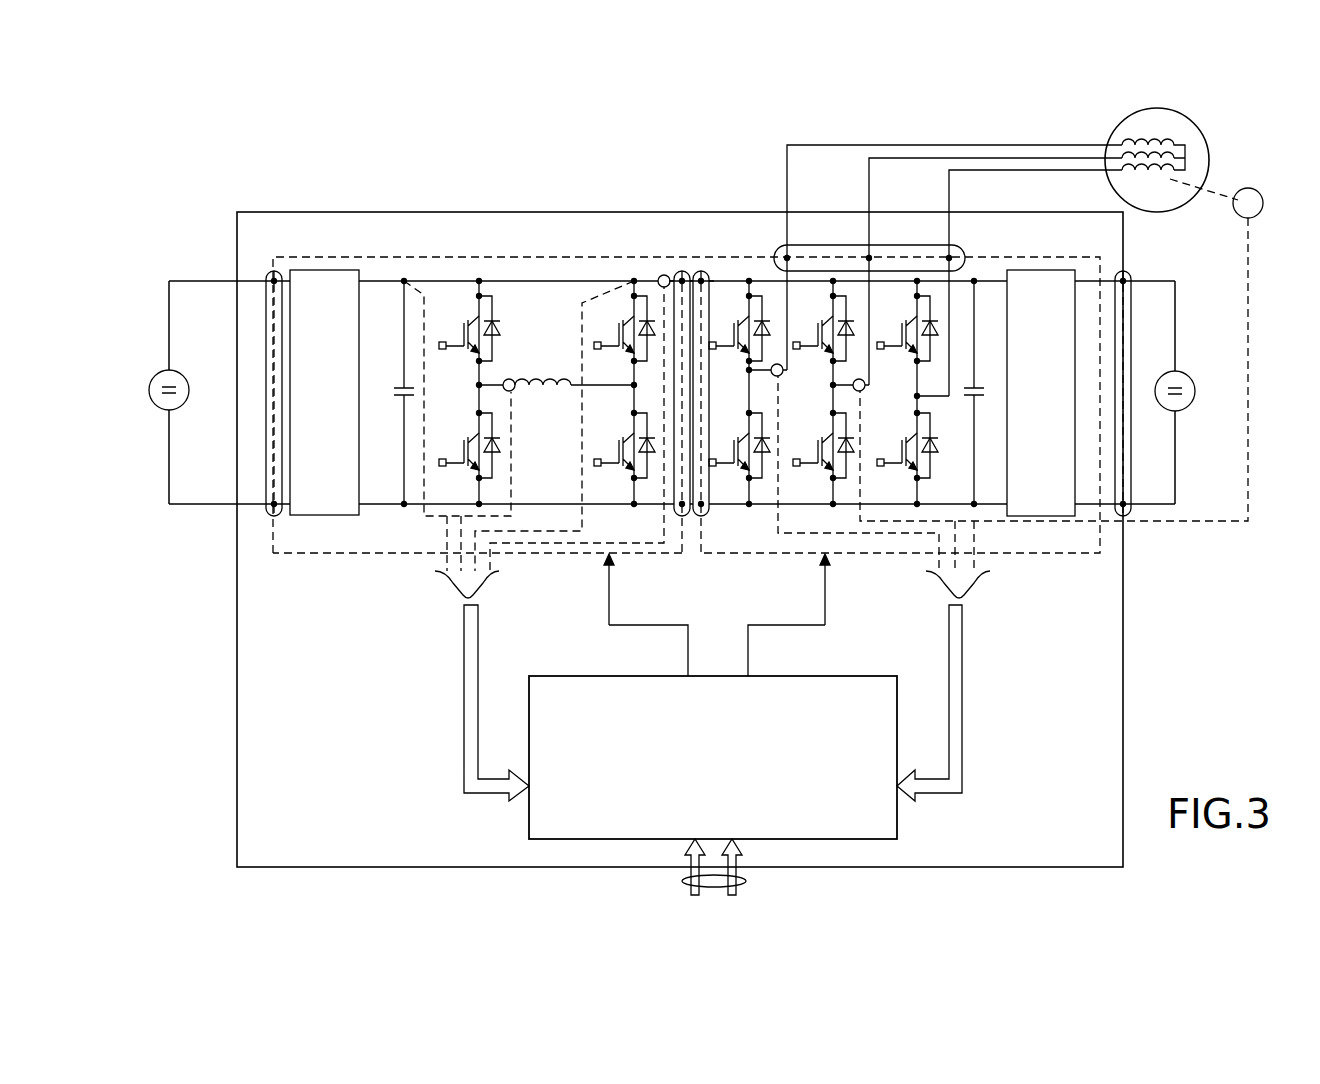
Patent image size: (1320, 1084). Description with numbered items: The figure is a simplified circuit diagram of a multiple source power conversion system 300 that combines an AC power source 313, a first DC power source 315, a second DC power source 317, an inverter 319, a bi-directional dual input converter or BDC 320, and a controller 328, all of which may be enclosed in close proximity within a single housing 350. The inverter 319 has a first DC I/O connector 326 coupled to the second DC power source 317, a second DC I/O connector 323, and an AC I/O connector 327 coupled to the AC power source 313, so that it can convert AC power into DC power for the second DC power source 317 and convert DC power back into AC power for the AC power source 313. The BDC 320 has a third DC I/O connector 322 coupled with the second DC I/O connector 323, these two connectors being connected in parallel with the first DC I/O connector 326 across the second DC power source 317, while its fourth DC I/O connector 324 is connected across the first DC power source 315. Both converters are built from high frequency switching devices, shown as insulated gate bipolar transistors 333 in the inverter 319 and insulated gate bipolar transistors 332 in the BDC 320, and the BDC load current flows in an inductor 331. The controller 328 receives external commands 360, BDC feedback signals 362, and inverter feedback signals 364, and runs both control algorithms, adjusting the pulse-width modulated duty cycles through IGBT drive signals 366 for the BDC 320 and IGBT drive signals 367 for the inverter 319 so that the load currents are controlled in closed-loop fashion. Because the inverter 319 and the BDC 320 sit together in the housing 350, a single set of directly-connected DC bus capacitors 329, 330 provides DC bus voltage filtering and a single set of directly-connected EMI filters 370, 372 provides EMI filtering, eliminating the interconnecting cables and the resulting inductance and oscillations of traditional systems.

The multiple source power conversion system 300 is at (302, 192).
The AC power source 313 is at (1210, 152).
The first DC power source 315 is at (178, 407).
The second DC power source 317 is at (1190, 408).
The inverter 319 is at (771, 255).
The BDC 320 is at (645, 382).
The third DC I/O connector 322 is at (678, 268).
The second DC I/O connector 323 is at (699, 268).
The fourth DC I/O connector 324 is at (272, 268).
The first DC I/O connector 326 is at (1130, 272).
The AC I/O connector 327 is at (919, 270).
The controller 328 is at (866, 837).
The DC bus capacitor 329 is at (393, 394).
The DC bus capacitor 330 is at (963, 395).
The inductor 331 is at (565, 370).
The insulated gate bipolar transistor 332 is at (450, 344).
The insulated gate bipolar transistor 333 is at (724, 345).
The housing 350 is at (435, 208).
The external commands 360 is at (680, 878).
The BDC feedback signals 362 is at (462, 664).
The inverter feedback signals 364 is at (961, 656).
The IGBT drive signals 366 is at (607, 622).
The IGBT drive signals 367 is at (802, 624).
The EMI filter 370 is at (333, 513).
The EMI filter 372 is at (1053, 513).